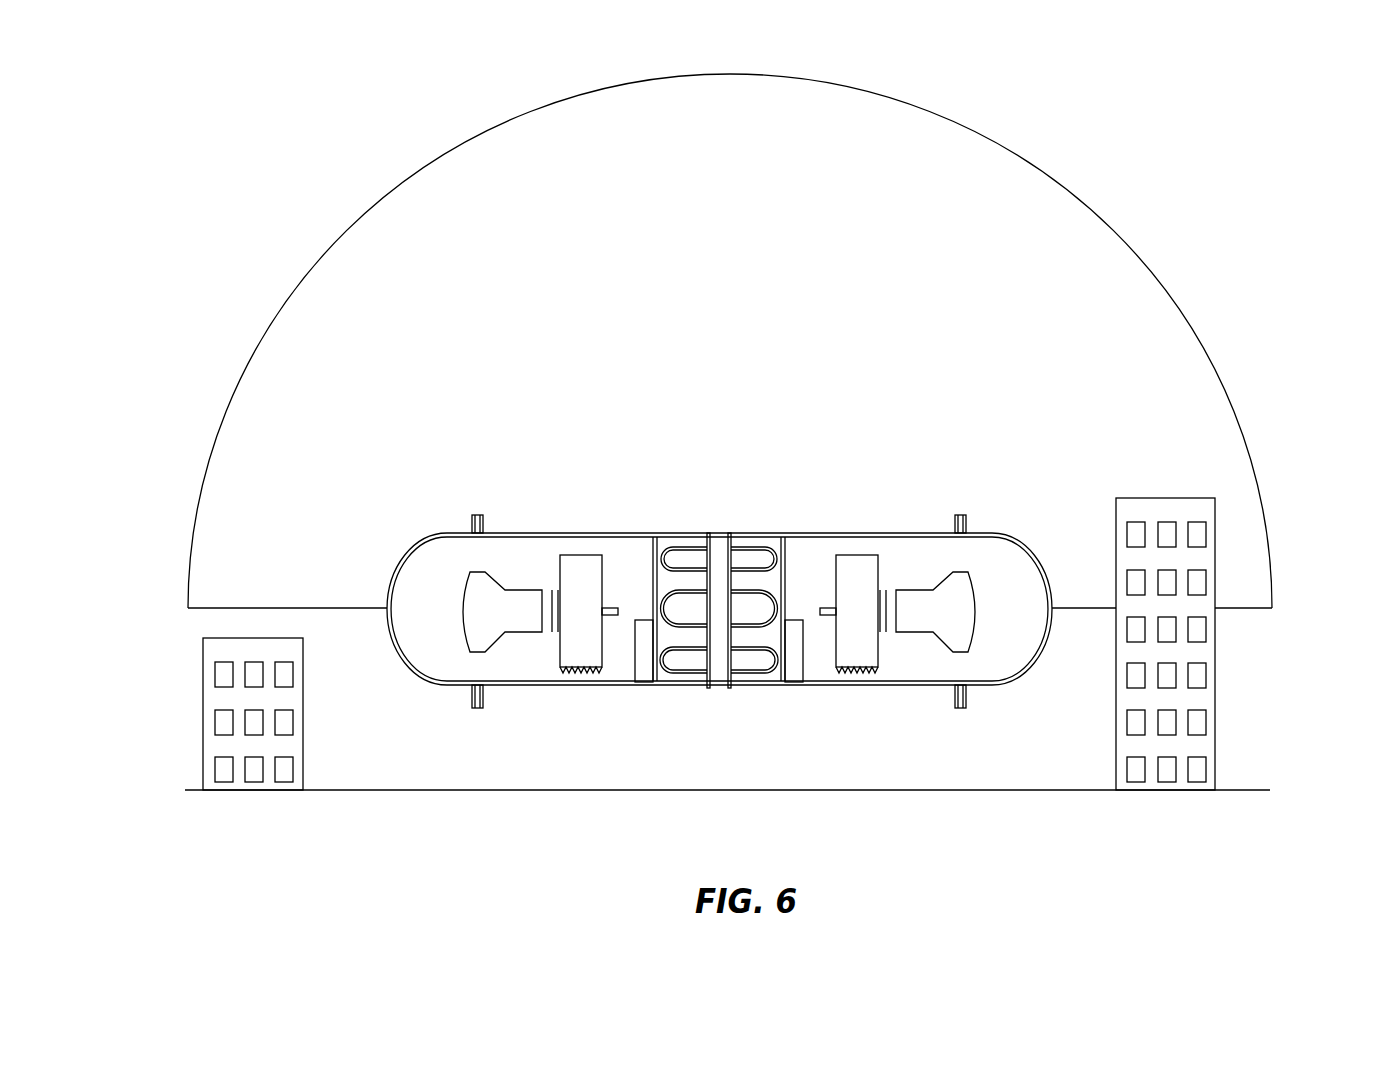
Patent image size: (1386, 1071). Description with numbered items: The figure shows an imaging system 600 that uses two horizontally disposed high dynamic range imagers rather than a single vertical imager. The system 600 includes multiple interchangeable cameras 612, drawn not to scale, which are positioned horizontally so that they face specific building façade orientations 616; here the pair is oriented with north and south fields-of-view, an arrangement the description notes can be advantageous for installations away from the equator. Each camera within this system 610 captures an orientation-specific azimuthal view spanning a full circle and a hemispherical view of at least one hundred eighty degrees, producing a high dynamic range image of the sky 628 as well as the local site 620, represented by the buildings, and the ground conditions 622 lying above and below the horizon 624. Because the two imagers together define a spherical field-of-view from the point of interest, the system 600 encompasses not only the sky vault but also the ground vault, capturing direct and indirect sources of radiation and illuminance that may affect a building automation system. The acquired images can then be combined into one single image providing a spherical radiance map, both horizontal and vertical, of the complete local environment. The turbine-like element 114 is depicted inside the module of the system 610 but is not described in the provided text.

The imaging system 600 is at (258, 150).
The system 610 is at (840, 462).
The turbine 114 is at (935, 603).
The cameras 612 is at (845, 565).
The building façade orientations 616 is at (1300, 597).
The local site 620 is at (253, 638).
The ground conditions 622 is at (772, 790).
The horizon 624 is at (315, 608).
The sky 628 is at (982, 172).